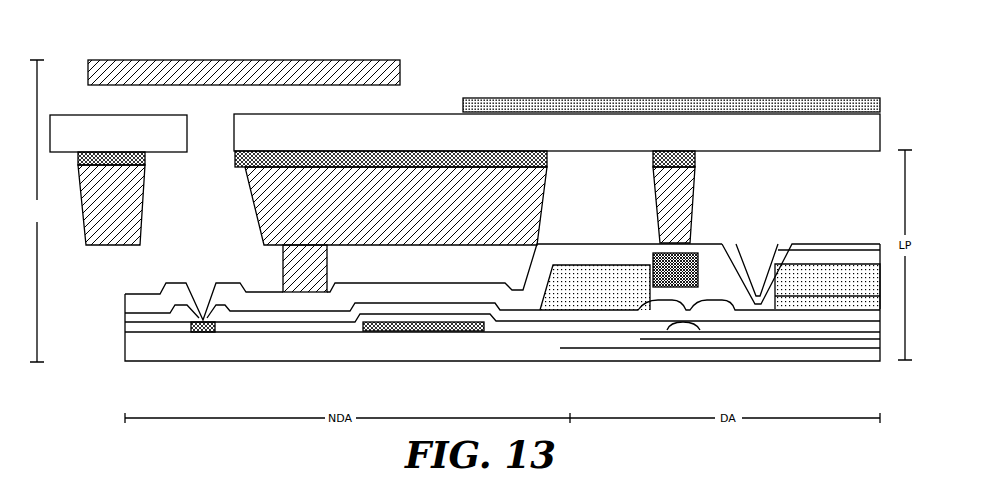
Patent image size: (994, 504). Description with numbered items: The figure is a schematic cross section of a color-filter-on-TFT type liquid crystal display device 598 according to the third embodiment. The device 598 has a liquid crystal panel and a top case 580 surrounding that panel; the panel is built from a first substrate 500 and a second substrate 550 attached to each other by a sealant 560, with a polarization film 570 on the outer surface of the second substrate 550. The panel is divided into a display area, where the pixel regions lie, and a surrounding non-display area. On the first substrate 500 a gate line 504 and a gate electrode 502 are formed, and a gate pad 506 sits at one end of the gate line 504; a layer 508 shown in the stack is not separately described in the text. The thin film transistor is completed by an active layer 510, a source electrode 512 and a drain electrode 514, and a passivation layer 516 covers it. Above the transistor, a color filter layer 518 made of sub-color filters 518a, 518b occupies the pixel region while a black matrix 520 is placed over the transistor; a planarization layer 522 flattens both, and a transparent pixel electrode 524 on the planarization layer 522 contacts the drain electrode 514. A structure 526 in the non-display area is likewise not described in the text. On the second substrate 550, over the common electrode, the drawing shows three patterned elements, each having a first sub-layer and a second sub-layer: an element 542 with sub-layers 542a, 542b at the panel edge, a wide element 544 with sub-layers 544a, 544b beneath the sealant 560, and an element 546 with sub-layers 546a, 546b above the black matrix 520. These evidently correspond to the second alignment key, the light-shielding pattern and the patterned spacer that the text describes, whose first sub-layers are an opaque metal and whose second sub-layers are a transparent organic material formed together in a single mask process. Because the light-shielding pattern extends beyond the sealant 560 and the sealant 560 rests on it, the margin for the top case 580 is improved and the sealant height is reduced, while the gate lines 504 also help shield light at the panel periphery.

The first substrate 500 is at (502, 302).
The gate electrode 502 is at (676, 334).
The gate line 504 is at (417, 333).
The gate pad 506 is at (201, 333).
The interlayer insulating layer 508 is at (537, 321).
The active layer 510 is at (717, 323).
The source electrode 512 is at (626, 349).
The drain electrode 514 is at (757, 312).
The passivation layer 516 is at (292, 322).
The color filter layer 518 is at (502, 247).
The red sub-color filter 518a is at (537, 262).
The green sub-color filter 518b is at (745, 248).
The black matrix 520 is at (697, 252).
The planarization layer 522 is at (872, 250).
The transparent pixel electrode 524 is at (840, 252).
The dam 526 is at (181, 280).
The first auxiliary electrode 542 is at (153, 198).
The first layer of first auxiliary electrode 542a is at (146, 164).
The second layer of first auxiliary electrode 542b is at (144, 212).
The second auxiliary electrode 544 is at (437, 198).
The first layer of second auxiliary electrode 544a is at (550, 164).
The second layer of second auxiliary electrode 544b is at (546, 205).
The third auxiliary electrode 546 is at (687, 147).
The first layer of third auxiliary electrode 546a is at (657, 173).
The second layer of third auxiliary electrode 546b is at (690, 177).
The second substrate 550 is at (73, 112).
The sealant 560 is at (330, 270).
The polarization film 570 is at (790, 98).
The top case 580 is at (401, 72).
The COT type LCD device 598 is at (37, 211).